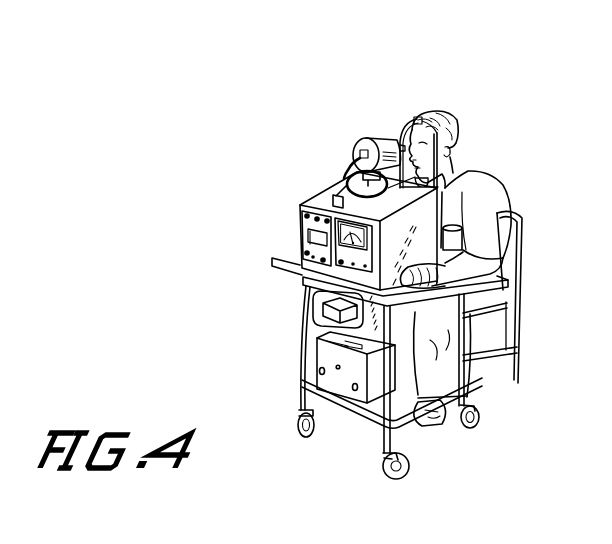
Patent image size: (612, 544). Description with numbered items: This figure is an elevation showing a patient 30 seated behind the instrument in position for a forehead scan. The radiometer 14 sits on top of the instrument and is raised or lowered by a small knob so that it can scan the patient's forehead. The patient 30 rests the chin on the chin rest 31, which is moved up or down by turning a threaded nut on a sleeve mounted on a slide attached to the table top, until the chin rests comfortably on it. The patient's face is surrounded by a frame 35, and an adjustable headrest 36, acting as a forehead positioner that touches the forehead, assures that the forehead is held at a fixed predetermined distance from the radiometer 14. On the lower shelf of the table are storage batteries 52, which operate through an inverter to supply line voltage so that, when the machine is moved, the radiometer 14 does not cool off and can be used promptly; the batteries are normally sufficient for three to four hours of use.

The radiometer 14 is at (390, 138).
The patient 30 is at (475, 174).
The chin rest 31 is at (423, 189).
The frame 35 is at (455, 125).
The headrest 36 is at (414, 126).
The storage batteries 52 is at (328, 354).